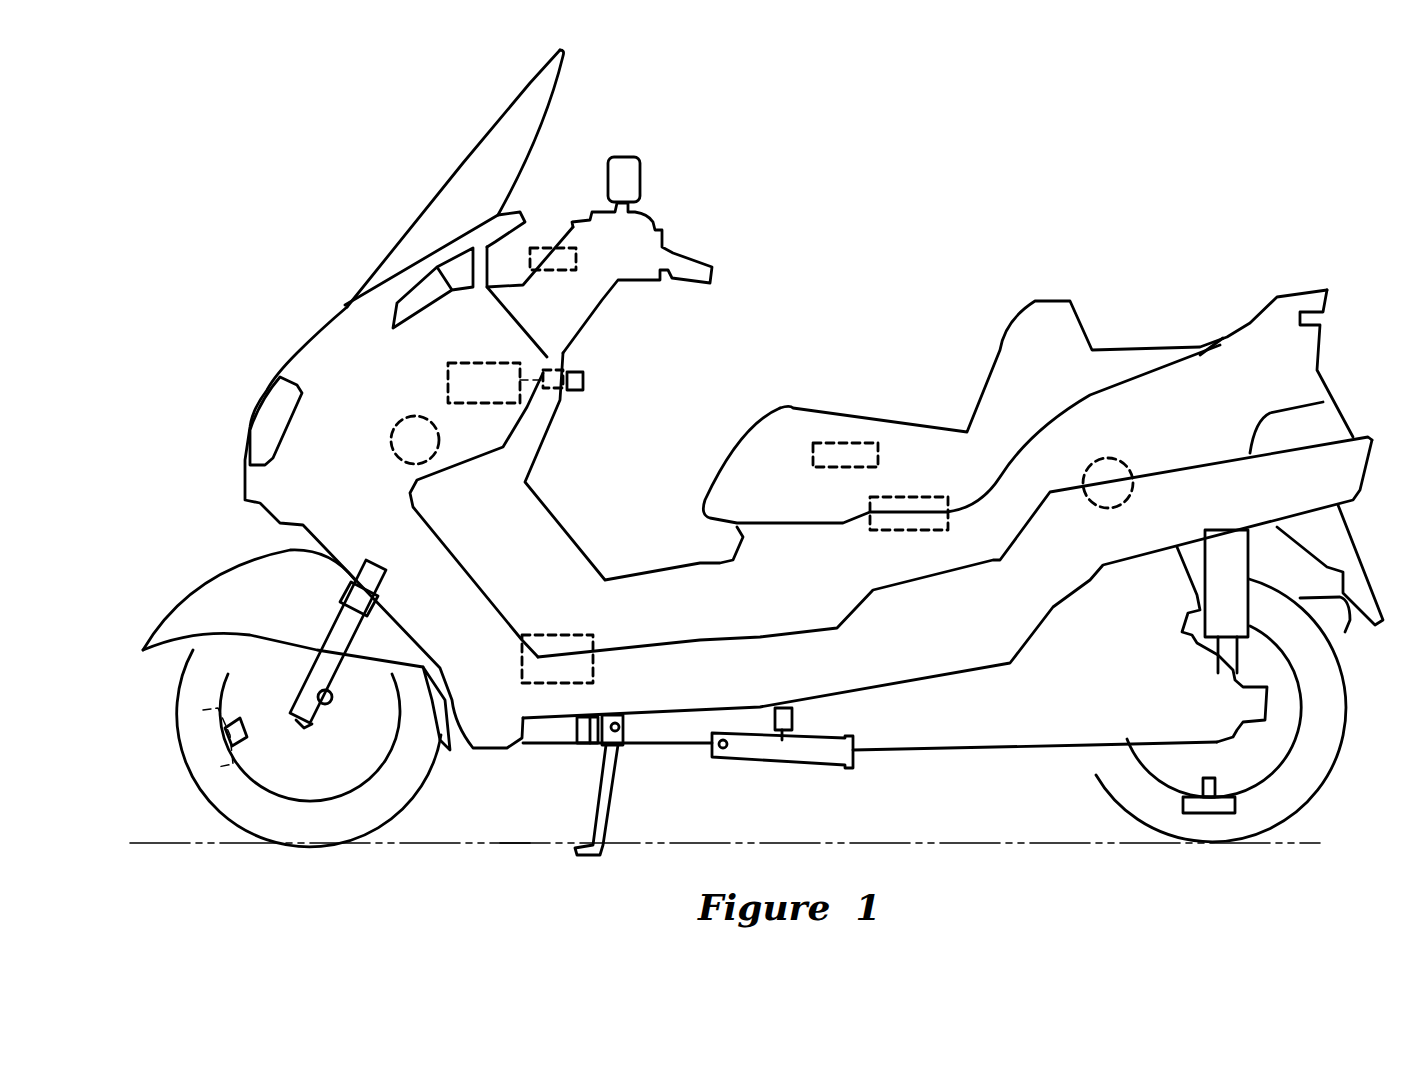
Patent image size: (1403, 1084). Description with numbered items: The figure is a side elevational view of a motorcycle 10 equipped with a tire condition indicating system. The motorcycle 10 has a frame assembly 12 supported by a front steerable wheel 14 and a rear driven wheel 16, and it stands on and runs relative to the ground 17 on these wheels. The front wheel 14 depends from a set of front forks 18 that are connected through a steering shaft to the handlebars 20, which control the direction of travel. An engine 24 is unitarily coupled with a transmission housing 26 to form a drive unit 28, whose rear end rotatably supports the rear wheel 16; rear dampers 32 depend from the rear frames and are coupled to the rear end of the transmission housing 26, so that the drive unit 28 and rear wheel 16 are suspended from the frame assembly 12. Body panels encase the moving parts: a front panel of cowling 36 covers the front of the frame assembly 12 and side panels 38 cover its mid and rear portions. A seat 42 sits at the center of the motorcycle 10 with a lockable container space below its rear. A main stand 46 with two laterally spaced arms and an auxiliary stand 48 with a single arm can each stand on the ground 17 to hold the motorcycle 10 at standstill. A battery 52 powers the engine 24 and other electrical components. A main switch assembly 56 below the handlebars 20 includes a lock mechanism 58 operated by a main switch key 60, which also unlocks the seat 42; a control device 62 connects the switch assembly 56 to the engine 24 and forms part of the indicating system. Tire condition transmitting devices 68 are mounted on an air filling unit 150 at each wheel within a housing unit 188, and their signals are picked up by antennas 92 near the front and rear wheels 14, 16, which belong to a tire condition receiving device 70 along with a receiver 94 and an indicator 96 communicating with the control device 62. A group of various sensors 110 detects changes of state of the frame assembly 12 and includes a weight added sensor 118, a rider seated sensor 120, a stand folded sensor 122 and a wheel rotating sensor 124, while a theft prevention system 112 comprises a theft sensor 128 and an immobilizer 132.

The motorcycle 10 is at (1018, 187).
The frame assembly 12 is at (646, 572).
The front steerable wheel 14 is at (205, 648).
The rear driven wheel 16 is at (1290, 778).
The ground 17 is at (513, 840).
The front forks 18 is at (337, 632).
The handlebars 20 is at (682, 250).
The engine 24 is at (917, 737).
The transmission housing 26 is at (1050, 745).
The drive unit 28 is at (870, 782).
The rear dampers 32 is at (1218, 583).
The front panel of cowling 36 is at (308, 355).
The side panels 38 is at (747, 618).
The seat 42 is at (790, 408).
The main stand 46 is at (760, 757).
The auxiliary stand 48 is at (612, 782).
The battery 52 is at (585, 665).
The main switch assembly 56 is at (672, 343).
The lock mechanism 58 is at (558, 360).
The main switch key 60 is at (586, 388).
The control device 62 is at (445, 380).
The tire condition transmitting device 68 is at (198, 708).
The tire condition receiving device 70 is at (508, 256).
The antennas 92 is at (392, 430).
The receiver 94 is at (580, 193).
The indicator 96 is at (540, 250).
The group of various sensors 110 is at (875, 405).
The theft prevention system 112 is at (939, 528).
The weight added sensor 118 is at (378, 582).
The rider seated sensor 120 is at (832, 443).
The stand folded sensor 122 is at (577, 730).
The wheel rotating sensor 124 is at (330, 705).
The theft sensor 128 is at (939, 528).
The immobilizer 132 is at (908, 497).
The air filling unit 150 is at (1205, 778).
The housing unit 188 is at (215, 738).